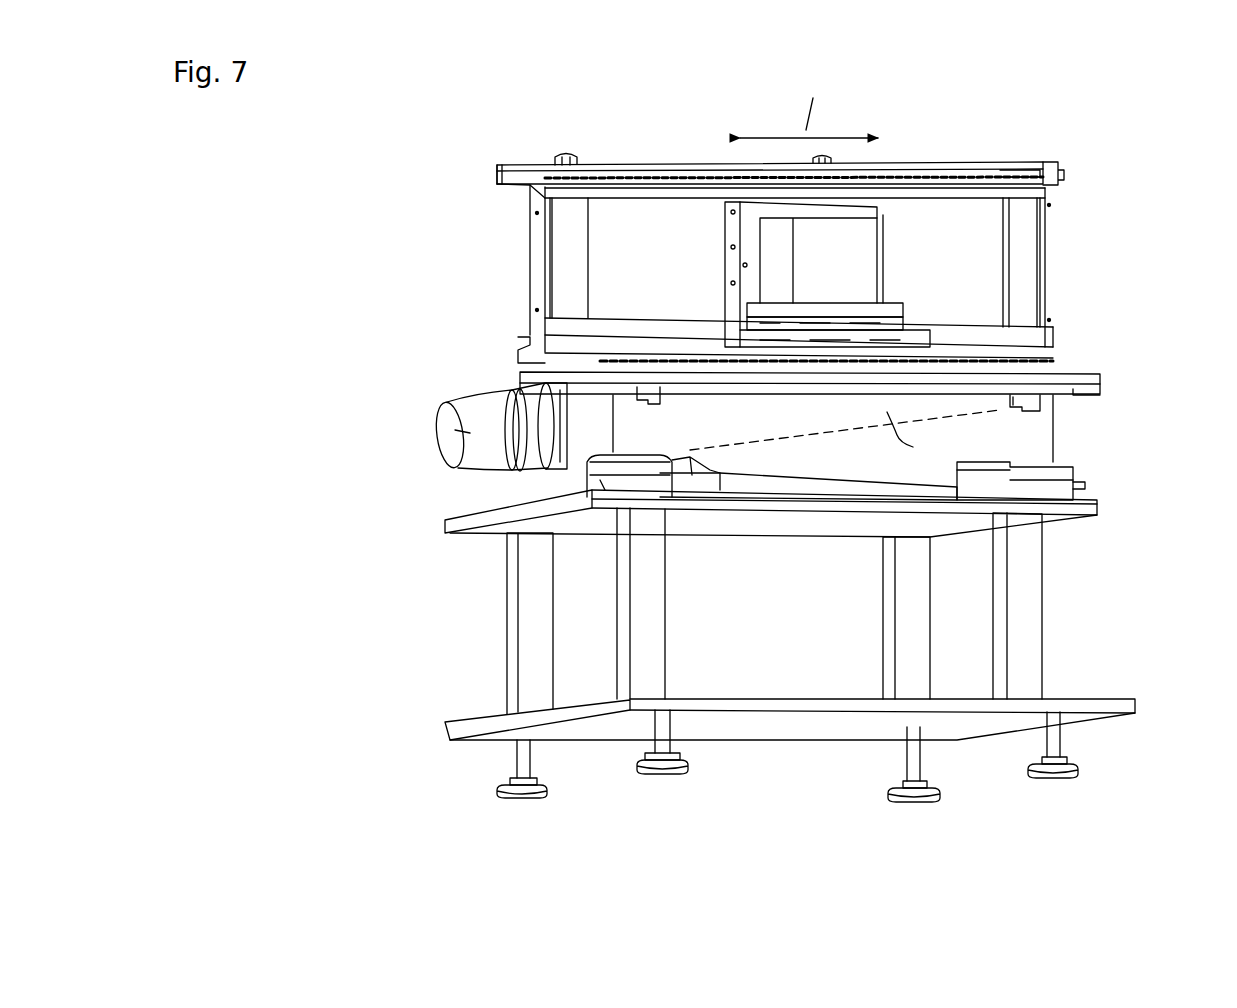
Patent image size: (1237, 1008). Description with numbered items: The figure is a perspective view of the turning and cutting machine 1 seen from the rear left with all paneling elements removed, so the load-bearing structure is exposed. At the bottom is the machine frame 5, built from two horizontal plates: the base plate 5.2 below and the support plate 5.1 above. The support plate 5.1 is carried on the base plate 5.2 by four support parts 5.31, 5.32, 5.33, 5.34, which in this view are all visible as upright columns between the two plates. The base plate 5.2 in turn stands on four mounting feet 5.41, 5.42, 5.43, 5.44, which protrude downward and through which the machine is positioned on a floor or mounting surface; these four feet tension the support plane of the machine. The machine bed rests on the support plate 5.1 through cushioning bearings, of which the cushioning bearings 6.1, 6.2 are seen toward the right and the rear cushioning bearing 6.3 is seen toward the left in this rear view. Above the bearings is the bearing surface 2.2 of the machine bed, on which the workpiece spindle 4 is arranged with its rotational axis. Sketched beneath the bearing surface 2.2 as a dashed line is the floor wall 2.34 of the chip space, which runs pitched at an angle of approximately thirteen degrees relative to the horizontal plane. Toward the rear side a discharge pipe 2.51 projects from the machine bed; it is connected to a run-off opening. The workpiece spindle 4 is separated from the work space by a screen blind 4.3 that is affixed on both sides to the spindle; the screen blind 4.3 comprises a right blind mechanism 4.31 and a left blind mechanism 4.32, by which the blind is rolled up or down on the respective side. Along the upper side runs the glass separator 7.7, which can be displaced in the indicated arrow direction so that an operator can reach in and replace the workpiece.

The turning and cutting machine 1 is at (276, 222).
The bearing surface 2.2 is at (1090, 372).
The floor wall 2.34 is at (848, 395).
The discharge pipe 2.51 is at (473, 408).
The workpiece spindle 4 is at (836, 285).
The screen blind 4.3 is at (970, 285).
The right blind mechanism 4.31 is at (1012, 257).
The left blind mechanism 4.32 is at (565, 247).
The machine frame 5 is at (1112, 645).
The support plate 5.1 is at (1097, 505).
The base plate 5.2 is at (1135, 707).
The support part 5.31 is at (1020, 598).
The support part 5.32 is at (900, 596).
The support part 5.33 is at (520, 628).
The support part 5.34 is at (645, 598).
The mounting foot 5.41 is at (1050, 775).
The mounting foot 5.42 is at (913, 800).
The mounting foot 5.43 is at (527, 795).
The mounting foot 5.44 is at (657, 770).
The cushioning bearing 6.1 is at (1030, 428).
The cushioning bearing 6.2 is at (1057, 480).
The rear cushioning bearing 6.3 is at (600, 482).
The glass separator 7.7 is at (978, 173).